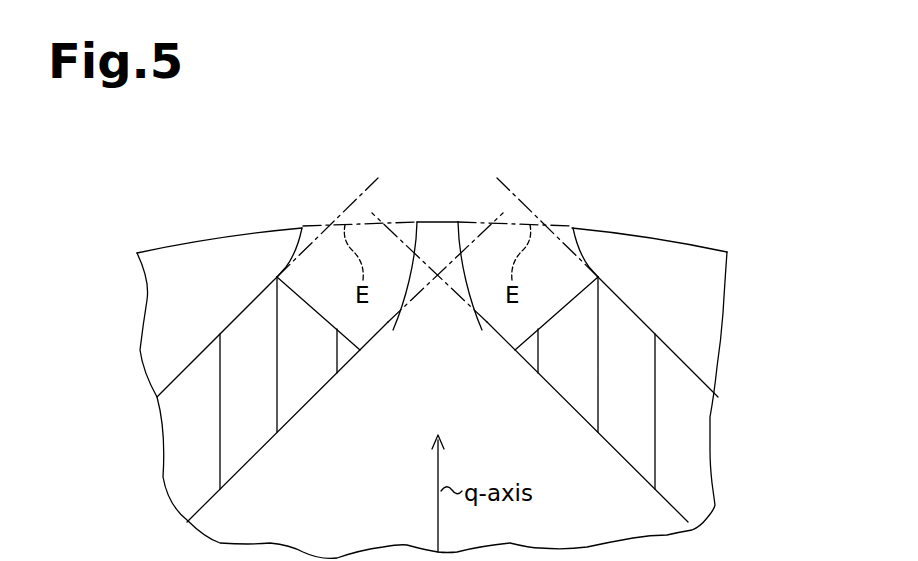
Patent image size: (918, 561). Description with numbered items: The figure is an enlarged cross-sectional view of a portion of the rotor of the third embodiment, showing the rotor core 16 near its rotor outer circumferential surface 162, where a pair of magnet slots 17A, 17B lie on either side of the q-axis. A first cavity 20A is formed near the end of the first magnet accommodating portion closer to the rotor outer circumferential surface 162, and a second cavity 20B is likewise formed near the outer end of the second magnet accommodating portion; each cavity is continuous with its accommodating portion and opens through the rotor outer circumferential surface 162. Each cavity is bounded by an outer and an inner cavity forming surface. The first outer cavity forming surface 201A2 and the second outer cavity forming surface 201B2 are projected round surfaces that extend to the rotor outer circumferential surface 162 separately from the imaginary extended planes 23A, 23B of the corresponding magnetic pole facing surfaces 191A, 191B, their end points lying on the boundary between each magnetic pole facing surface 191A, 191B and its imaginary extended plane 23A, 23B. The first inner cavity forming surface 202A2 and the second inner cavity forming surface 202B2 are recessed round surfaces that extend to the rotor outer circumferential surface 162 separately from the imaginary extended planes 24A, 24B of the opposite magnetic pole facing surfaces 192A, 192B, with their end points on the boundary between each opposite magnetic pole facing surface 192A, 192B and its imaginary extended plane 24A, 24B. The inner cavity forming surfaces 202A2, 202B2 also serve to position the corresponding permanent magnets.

The rotor core 16 is at (706, 256).
The rotor outer circumferential surface 162 is at (663, 239).
The first magnet slot 17A is at (694, 438).
The second magnet slot 17B is at (178, 437).
The first magnetic pole facing surface 191A is at (688, 366).
The second magnetic pole facing surface 191B is at (183, 371).
The first opposite magnetic pole facing surface 192A is at (612, 443).
The second opposite magnetic pole facing surface 192B is at (262, 443).
The first cavity 20A is at (557, 292).
The second cavity 20B is at (327, 288).
The first outer cavity forming surface 201A2 is at (559, 236).
The second outer cavity forming surface 201B2 is at (316, 236).
The first inner cavity forming surface 202A2 is at (478, 314).
The second inner cavity forming surface 202B2 is at (396, 316).
The imaginary extended plane of the first magnetic pole facing surface 23A is at (525, 200).
The imaginary extended plane of the second magnetic pole facing surface 23B is at (350, 200).
The imaginary extended plane of the first opposite magnetic pole facing surface 24A is at (395, 232).
The imaginary extended plane of the second opposite magnetic pole facing surface 24B is at (466, 238).